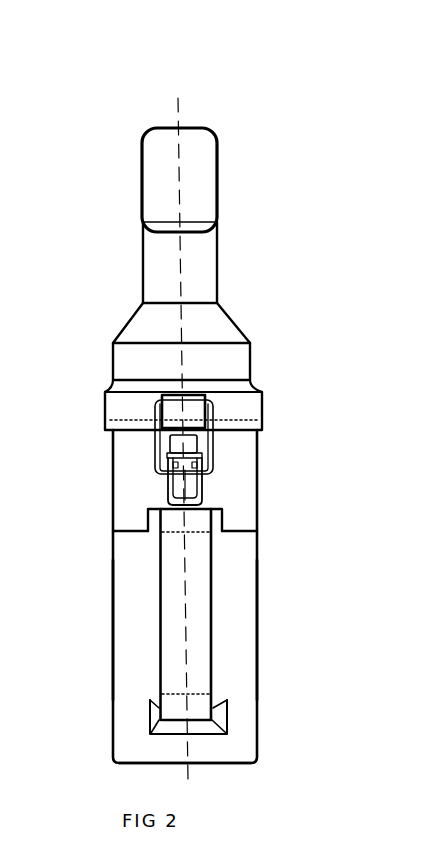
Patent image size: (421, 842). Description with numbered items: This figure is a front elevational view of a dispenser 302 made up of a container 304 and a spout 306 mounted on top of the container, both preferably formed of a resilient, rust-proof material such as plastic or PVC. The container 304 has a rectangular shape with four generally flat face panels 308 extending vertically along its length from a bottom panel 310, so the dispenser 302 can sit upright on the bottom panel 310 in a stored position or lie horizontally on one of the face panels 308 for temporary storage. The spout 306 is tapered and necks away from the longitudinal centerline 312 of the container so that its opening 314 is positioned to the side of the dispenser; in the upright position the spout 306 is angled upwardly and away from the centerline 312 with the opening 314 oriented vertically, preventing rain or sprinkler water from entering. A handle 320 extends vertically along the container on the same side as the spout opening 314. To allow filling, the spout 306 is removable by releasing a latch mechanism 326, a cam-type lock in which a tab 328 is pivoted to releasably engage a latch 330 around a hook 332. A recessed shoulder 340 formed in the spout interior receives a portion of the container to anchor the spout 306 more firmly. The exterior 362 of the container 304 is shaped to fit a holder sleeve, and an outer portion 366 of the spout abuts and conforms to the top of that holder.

The dispenser 302 is at (280, 120).
The container 304 is at (258, 570).
The spout 306 is at (218, 258).
The face panels 308 is at (258, 667).
The bottom panel 310 is at (238, 763).
The longitudinal centerline 312 is at (182, 439).
The opening 314 is at (217, 173).
The handle 320 is at (212, 618).
The latch mechanism 326 is at (230, 445).
The tab 328 is at (200, 490).
The latch 330 is at (213, 418).
The hook 332 is at (190, 412).
The recessed shoulder 340 is at (266, 407).
The exterior 362 is at (113, 565).
The outer portion 366 is at (108, 436).